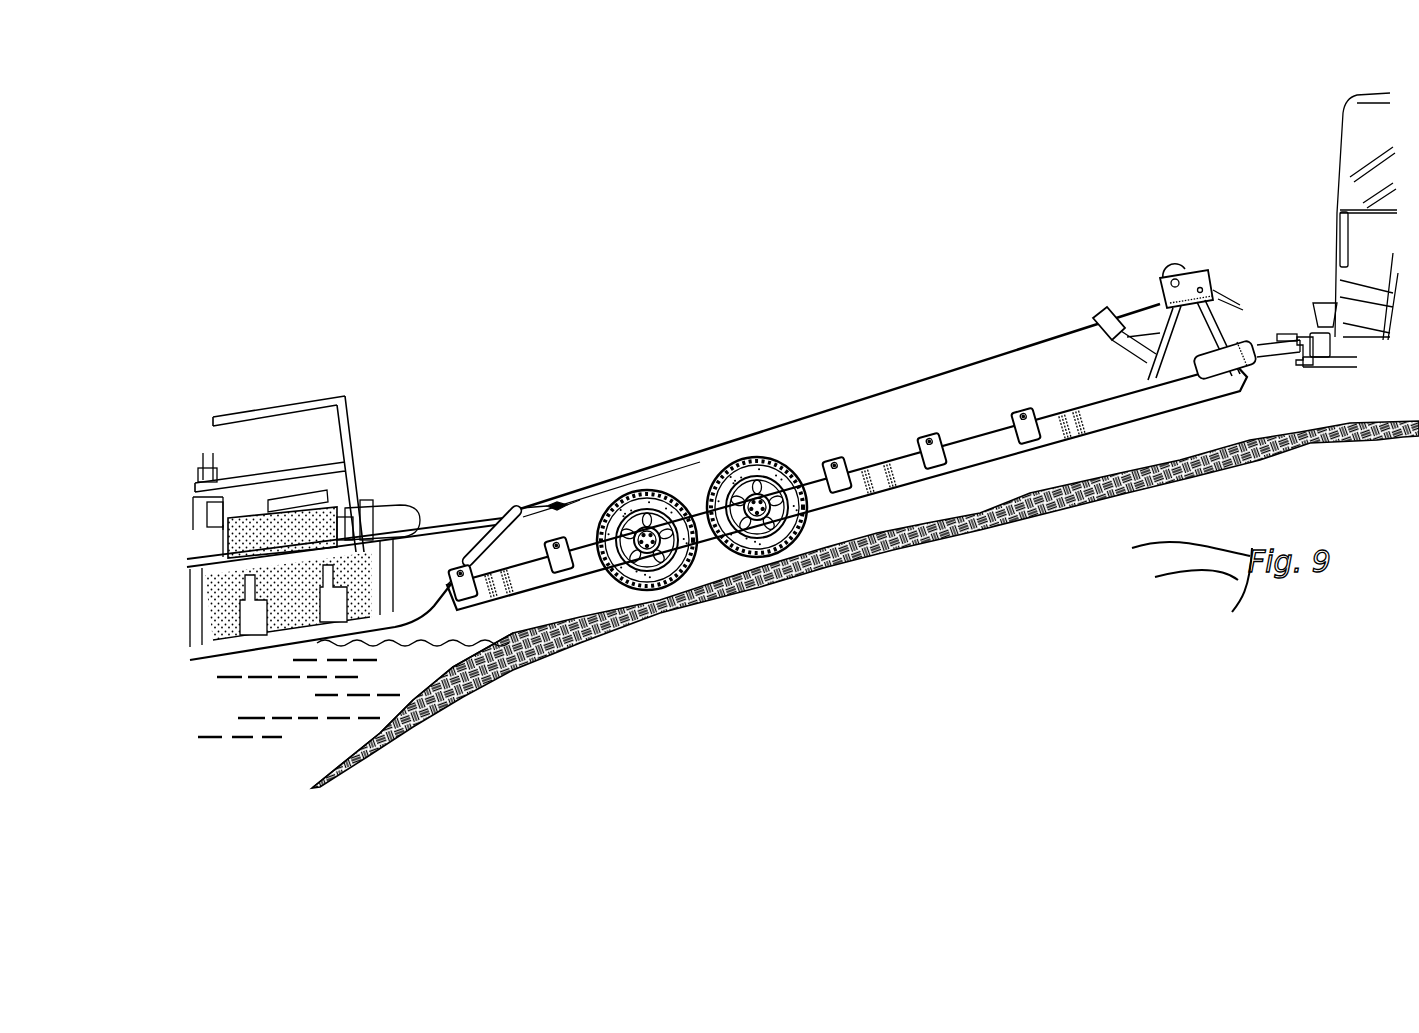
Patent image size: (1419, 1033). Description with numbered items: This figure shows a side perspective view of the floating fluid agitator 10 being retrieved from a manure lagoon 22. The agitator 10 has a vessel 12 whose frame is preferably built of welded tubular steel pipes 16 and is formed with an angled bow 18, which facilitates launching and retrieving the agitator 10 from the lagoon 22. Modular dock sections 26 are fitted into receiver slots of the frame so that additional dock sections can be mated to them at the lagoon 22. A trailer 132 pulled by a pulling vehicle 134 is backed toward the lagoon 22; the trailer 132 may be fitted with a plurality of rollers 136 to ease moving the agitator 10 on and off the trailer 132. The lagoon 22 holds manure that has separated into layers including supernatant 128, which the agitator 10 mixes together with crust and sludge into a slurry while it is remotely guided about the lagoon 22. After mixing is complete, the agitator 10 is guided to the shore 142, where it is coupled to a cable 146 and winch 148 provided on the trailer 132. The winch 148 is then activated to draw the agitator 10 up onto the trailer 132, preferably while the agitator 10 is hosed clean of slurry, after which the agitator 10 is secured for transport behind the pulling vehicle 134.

The floating fluid agitator 10 is at (310, 380).
The vessel 12 is at (345, 494).
The modular dock sections 26 is at (302, 573).
The tubular steel pipes 16 is at (477, 530).
The angled bow 18 is at (498, 530).
The rollers 136 is at (557, 543).
The trailer 132 is at (958, 441).
The shore 142 is at (897, 553).
The supernatant 128 is at (360, 703).
The manure lagoon 22 is at (367, 744).
The cable 146 is at (1133, 307).
The winch 148 is at (1197, 273).
The pulling vehicle 134 is at (1365, 162).